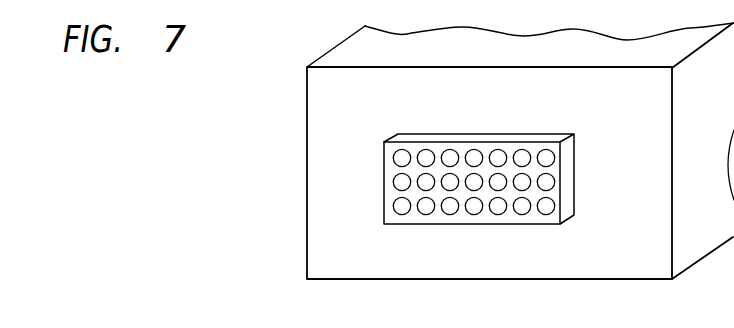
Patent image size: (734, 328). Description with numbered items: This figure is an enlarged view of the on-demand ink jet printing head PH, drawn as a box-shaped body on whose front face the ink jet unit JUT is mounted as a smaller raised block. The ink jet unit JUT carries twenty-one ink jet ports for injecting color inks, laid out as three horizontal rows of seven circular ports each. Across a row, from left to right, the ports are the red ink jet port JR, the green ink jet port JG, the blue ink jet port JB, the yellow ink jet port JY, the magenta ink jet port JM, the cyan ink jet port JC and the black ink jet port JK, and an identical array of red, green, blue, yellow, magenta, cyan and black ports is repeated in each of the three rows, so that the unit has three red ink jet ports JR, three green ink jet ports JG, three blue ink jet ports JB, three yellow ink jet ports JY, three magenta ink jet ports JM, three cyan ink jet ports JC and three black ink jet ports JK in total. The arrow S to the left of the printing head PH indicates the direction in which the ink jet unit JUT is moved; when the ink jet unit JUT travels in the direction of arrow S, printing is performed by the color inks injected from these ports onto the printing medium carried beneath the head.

The printing head PH is at (305, 240).
The arrow S is at (250, 158).
The ink jet unit JUT is at (454, 158).
The red ink jet ports JR is at (400, 148).
The green ink jet ports JG is at (422, 149).
The blue ink jet ports JB is at (447, 150).
The yellow ink jet ports JY is at (473, 150).
The magenta ink jet ports JM is at (496, 150).
The cyan ink jet ports JC is at (523, 150).
The black ink jet ports JK is at (547, 149).